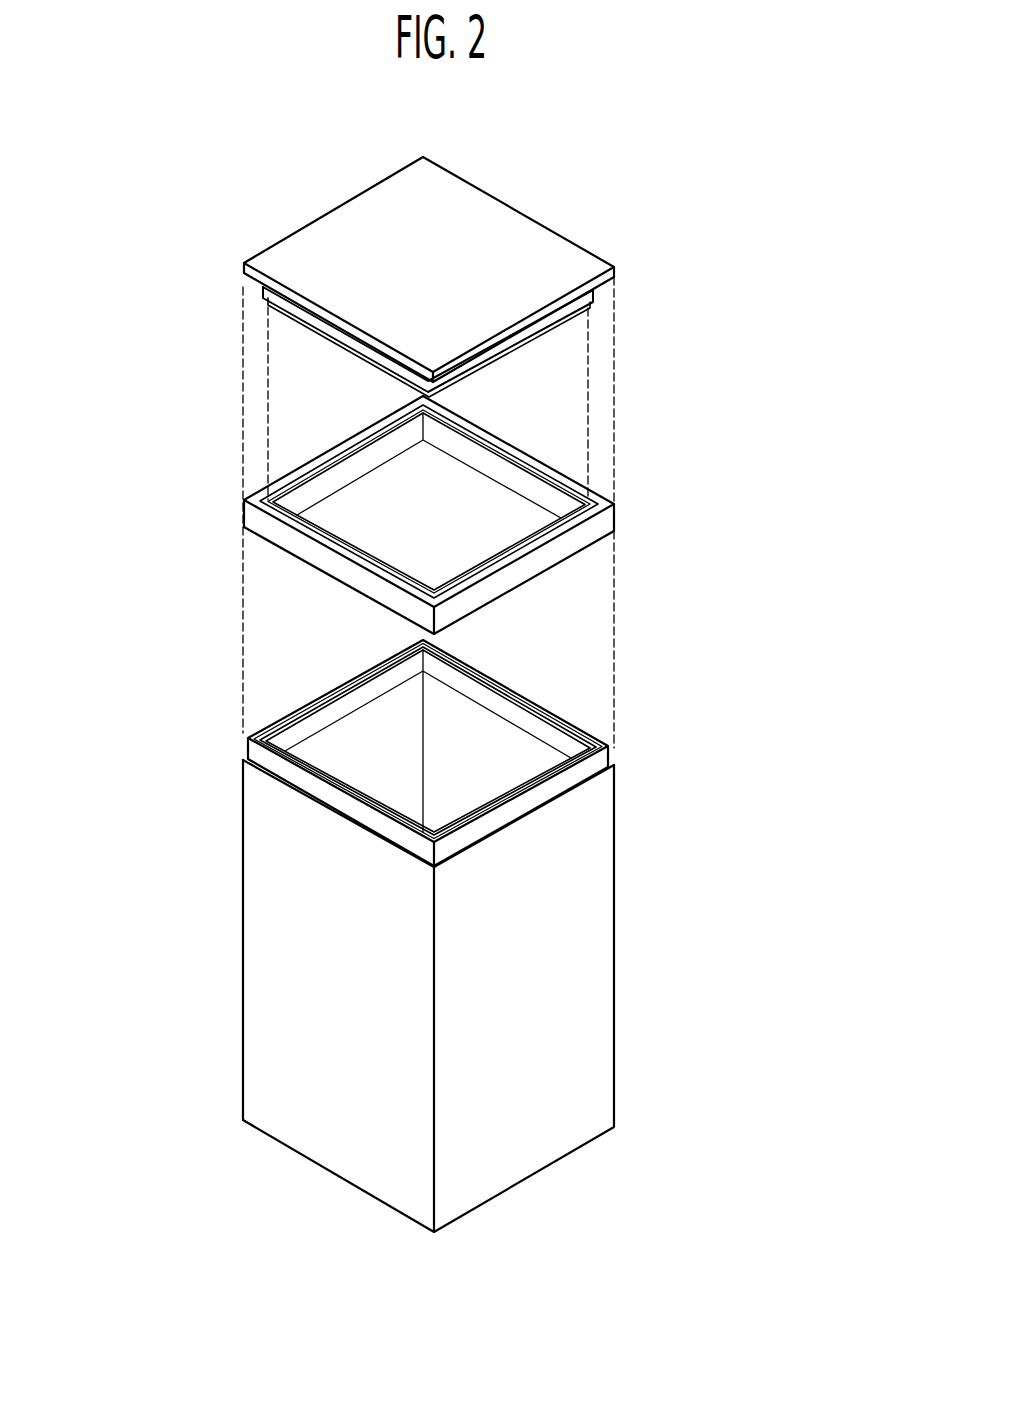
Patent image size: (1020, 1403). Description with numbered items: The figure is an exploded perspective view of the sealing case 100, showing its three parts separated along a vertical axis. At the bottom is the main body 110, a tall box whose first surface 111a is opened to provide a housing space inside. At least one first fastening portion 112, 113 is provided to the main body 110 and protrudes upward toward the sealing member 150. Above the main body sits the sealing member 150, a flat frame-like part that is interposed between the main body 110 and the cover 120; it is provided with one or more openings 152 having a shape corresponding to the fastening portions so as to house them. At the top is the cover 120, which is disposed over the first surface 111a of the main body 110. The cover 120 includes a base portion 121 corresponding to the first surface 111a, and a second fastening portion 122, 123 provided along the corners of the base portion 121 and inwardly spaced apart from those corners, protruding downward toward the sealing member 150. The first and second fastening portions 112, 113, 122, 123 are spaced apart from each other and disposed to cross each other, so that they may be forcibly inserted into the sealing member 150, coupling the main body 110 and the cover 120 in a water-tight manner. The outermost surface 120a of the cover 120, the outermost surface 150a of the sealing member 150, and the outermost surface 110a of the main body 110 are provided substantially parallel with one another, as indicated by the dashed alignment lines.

The sealing case 100 is at (646, 100).
The main body 110 is at (650, 884).
The outermost surface of the main body 110a is at (228, 920).
The first surface 111a is at (486, 761).
The first fastening portion 112 is at (610, 742).
The first fastening portion 113 is at (488, 685).
The cover 120 is at (584, 210).
The outermost surface of the cover 120a is at (228, 266).
The base portion 121 is at (480, 200).
The second fastening portion 122 is at (593, 292).
The second fastening portion 123 is at (590, 305).
The sealing member 150 is at (650, 512).
The outermost surface of the sealing member 150a is at (228, 510).
The opening 152 is at (267, 500).